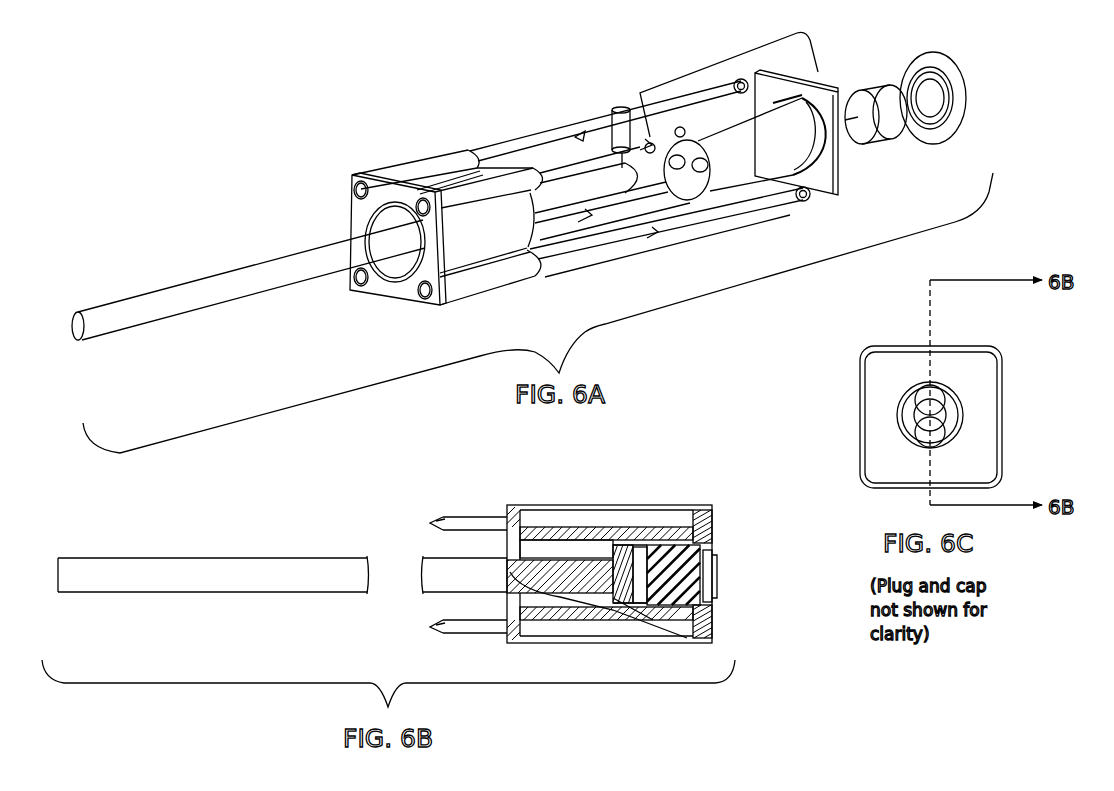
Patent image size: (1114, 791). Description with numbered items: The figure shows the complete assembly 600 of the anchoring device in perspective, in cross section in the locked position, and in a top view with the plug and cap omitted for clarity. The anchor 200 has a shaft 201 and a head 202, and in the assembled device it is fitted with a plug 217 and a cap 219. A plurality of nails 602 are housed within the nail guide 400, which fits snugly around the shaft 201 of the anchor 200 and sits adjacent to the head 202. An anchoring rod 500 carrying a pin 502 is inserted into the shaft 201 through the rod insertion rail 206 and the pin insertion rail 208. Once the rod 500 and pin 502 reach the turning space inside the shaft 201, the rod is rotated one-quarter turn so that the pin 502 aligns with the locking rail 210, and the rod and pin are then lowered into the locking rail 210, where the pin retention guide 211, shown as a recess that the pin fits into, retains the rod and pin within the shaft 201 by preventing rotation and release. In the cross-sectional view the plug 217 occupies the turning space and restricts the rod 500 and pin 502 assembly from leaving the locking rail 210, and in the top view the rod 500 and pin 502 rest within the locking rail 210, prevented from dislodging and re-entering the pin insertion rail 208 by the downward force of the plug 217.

In FIG. 6A, the complete assembly 600 is at (434, 75).
In FIG. 6B, the complete assembly 600 is at (438, 488).
In FIG. 6A, the nail guide 400 is at (387, 172).
In FIG. 6B, the nail guide 400 is at (508, 512).
In FIG. 6A, the anchoring rod 500 is at (277, 292).
In FIG. 6B, the anchoring rod 500 is at (568, 620).
In FIG. 6C, the anchoring rod 500 is at (930, 415).
In FIG. 6A, the pin 502 is at (618, 106).
In FIG. 6B, the pin 502 is at (625, 622).
In FIG. 6C, the pin 502 is at (920, 395).
In FIG. 6A, the nails 602 is at (586, 128).
In FIG. 6A, the anchor 200 is at (720, 68).
In FIG. 6A, the shaft 201 is at (747, 178).
In FIG. 6B, the shaft 201 is at (565, 533).
In FIG. 6B, the head 202 is at (700, 510).
In FIG. 6A, the rod insertion rail 206 is at (685, 173).
In FIG. 6A, the pin insertion rail 208 is at (702, 167).
In FIG. 6C, the pin insertion rail 208 is at (952, 415).
In FIG. 6B, the locking rail 210 is at (640, 540).
In FIG. 6C, the locking rail 210 is at (930, 390).
In FIG. 6B, the pin retention guide 211 is at (622, 535).
In FIG. 6C, the pin retention guide 211 is at (915, 435).
In FIG. 6A, the plug 217 is at (862, 90).
In FIG. 6B, the plug 217 is at (718, 578).
In FIG. 6A, the cap 219 is at (927, 55).